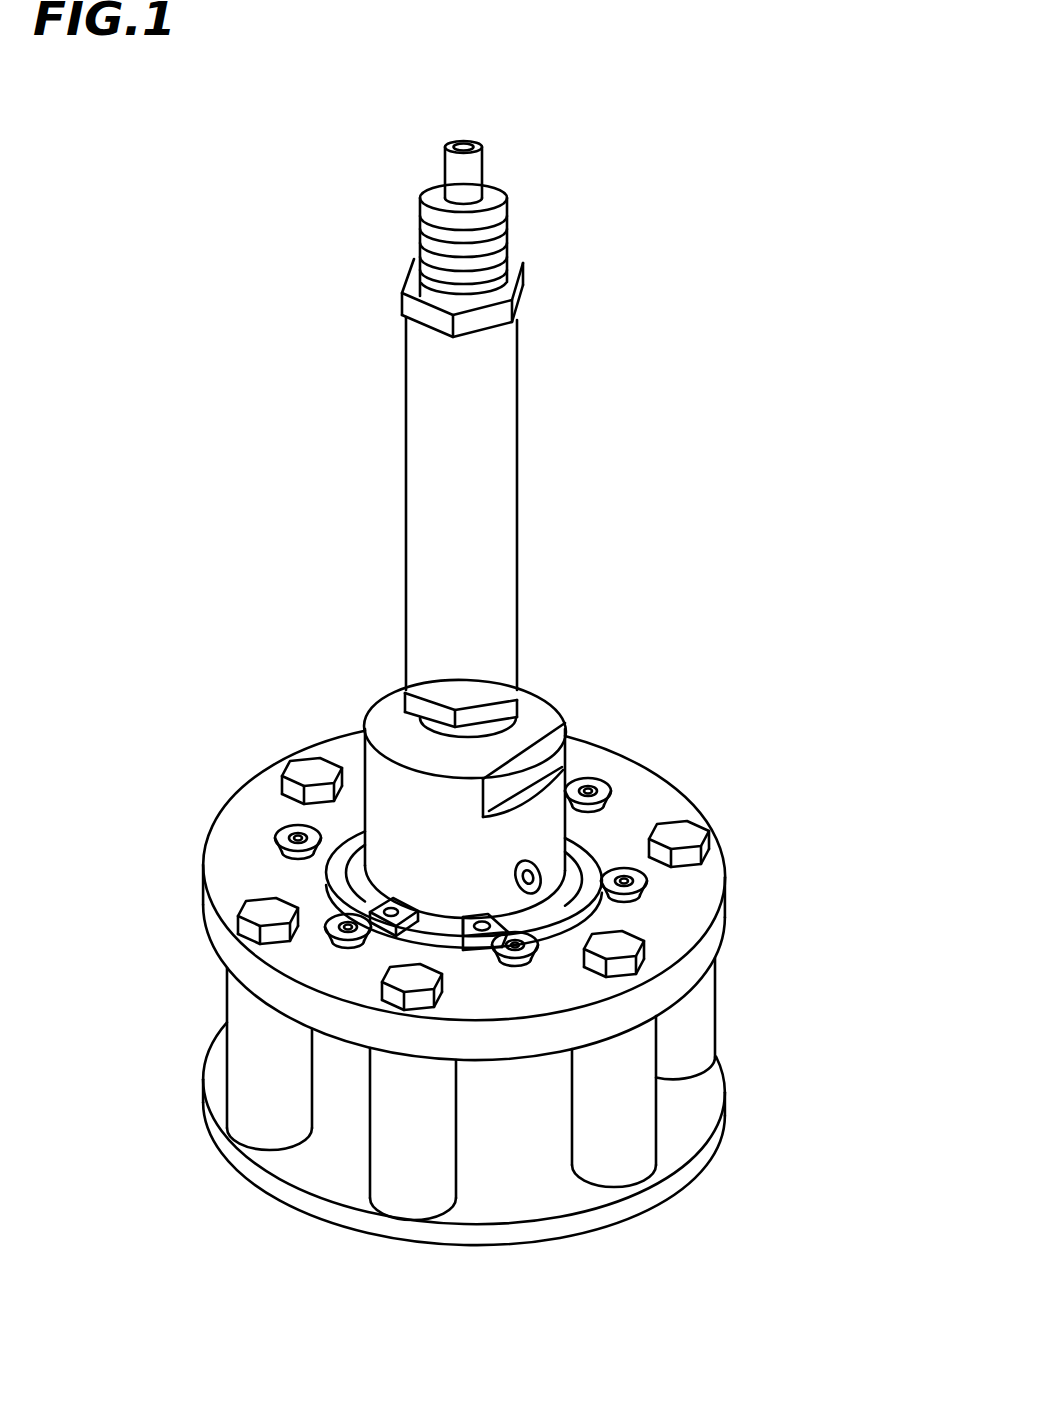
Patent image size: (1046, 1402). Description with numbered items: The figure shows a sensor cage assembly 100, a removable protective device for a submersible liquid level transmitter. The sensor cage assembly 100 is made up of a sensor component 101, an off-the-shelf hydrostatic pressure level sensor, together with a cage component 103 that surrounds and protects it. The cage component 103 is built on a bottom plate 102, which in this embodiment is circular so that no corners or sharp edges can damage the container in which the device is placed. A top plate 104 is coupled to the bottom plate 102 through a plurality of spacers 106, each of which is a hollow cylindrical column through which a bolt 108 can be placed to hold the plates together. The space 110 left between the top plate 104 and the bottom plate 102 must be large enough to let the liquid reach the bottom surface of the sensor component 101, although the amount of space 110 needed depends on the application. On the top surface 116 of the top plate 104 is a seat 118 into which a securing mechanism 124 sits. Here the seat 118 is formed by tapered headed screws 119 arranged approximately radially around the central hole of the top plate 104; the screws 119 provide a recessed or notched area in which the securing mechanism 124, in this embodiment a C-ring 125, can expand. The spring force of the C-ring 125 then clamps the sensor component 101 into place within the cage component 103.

The sensor cage assembly 100 is at (478, 720).
The sensor component 101 is at (517, 391).
The bottom plate 102 is at (642, 1205).
The cage component 103 is at (684, 750).
The top plate 104 is at (547, 895).
The spacers 106 is at (247, 1053).
The bolt 108 is at (312, 766).
The space 110 is at (533, 1162).
The top surface 116 is at (668, 936).
The seat 118 is at (347, 972).
The tapered headed screws 119 is at (588, 778).
The securing mechanism 124 is at (629, 824).
The C-ring 125 is at (330, 876).